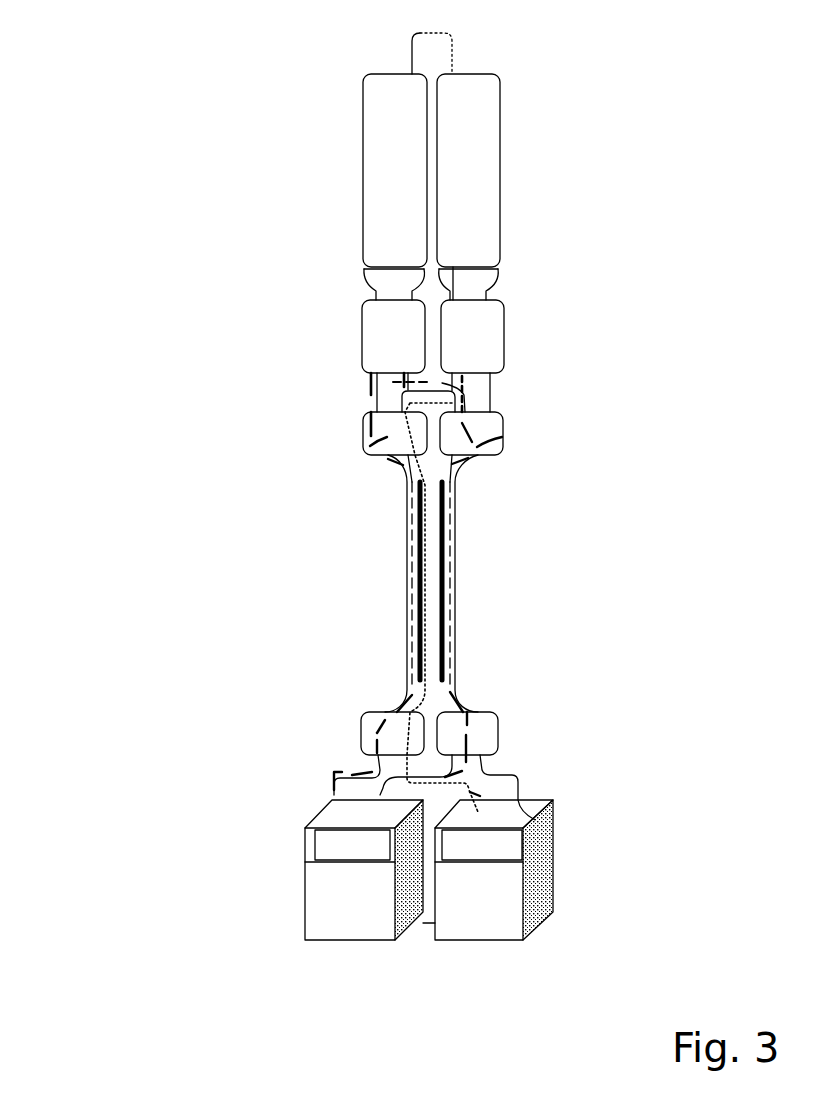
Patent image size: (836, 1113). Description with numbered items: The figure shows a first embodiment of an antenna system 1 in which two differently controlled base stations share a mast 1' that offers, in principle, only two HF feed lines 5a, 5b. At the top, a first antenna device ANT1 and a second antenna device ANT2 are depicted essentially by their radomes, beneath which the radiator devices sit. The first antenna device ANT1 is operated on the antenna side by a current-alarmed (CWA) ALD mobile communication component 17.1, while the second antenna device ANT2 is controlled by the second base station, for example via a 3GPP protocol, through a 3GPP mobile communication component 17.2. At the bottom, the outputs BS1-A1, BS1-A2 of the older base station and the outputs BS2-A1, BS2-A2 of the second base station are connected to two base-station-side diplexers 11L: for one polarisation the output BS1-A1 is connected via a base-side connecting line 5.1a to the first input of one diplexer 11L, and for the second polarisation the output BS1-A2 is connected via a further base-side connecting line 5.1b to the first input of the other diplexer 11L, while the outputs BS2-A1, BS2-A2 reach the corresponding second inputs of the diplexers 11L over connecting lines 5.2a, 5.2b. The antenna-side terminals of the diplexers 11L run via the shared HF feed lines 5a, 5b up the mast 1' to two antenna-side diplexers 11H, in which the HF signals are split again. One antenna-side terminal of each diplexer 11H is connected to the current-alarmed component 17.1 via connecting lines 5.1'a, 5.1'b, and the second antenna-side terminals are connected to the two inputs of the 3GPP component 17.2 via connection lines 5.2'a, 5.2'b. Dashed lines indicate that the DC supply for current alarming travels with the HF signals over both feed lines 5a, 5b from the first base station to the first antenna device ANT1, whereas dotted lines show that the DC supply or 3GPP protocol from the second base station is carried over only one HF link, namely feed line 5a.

The antenna system 1 is at (499, 43).
The mast 1' is at (454, 583).
The first antenna device ANT1 is at (377, 105).
The second antenna device ANT2 is at (487, 102).
The current-alarmed ALD mobile communication component 17.1 is at (362, 352).
The 3GPP mobile communication component 17.2 is at (504, 350).
The connecting line 5.1'a is at (320, 392).
The connecting line 5.1'b is at (316, 412).
The connection line 5.2'a is at (568, 385).
The connection line 5.2'b is at (587, 399).
The antenna-side diplexer 11H is at (370, 446).
The HF feed line 5a is at (420, 600).
The HF feed line 5b is at (442, 593).
The base-station-side diplexer 11L is at (365, 712).
The base-station-side connecting line 5.1a is at (333, 790).
The base-side connecting line 5.1b is at (389, 798).
The connecting line 5.2a is at (505, 793).
The connecting line 5.2b is at (505, 773).
The output of base station BS1 BS1-A1 is at (333, 803).
The output of base station BS1 BS1-A2 is at (385, 790).
The output of base station BS2 BS2-A1 is at (535, 820).
The output of base station BS2 BS2-A2 is at (482, 812).